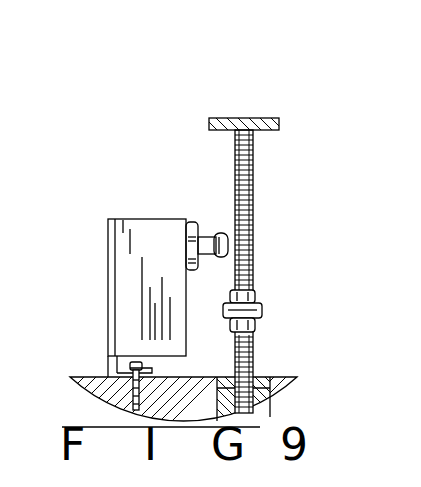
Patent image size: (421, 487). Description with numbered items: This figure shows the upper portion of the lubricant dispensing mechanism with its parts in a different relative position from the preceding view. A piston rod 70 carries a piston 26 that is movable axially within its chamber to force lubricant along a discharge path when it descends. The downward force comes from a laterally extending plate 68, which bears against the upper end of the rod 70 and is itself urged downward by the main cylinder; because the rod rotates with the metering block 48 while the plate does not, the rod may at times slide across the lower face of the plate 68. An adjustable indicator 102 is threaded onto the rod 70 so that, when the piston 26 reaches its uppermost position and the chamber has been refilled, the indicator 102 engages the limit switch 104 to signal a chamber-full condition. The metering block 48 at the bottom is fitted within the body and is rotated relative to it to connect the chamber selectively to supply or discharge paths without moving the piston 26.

The plate 68 is at (248, 118).
The piston rod 70 is at (235, 159).
The limit switch 104 is at (176, 228).
The adjustable indicator 102 is at (263, 311).
The piston 26 is at (258, 387).
The metering block 48 is at (95, 384).